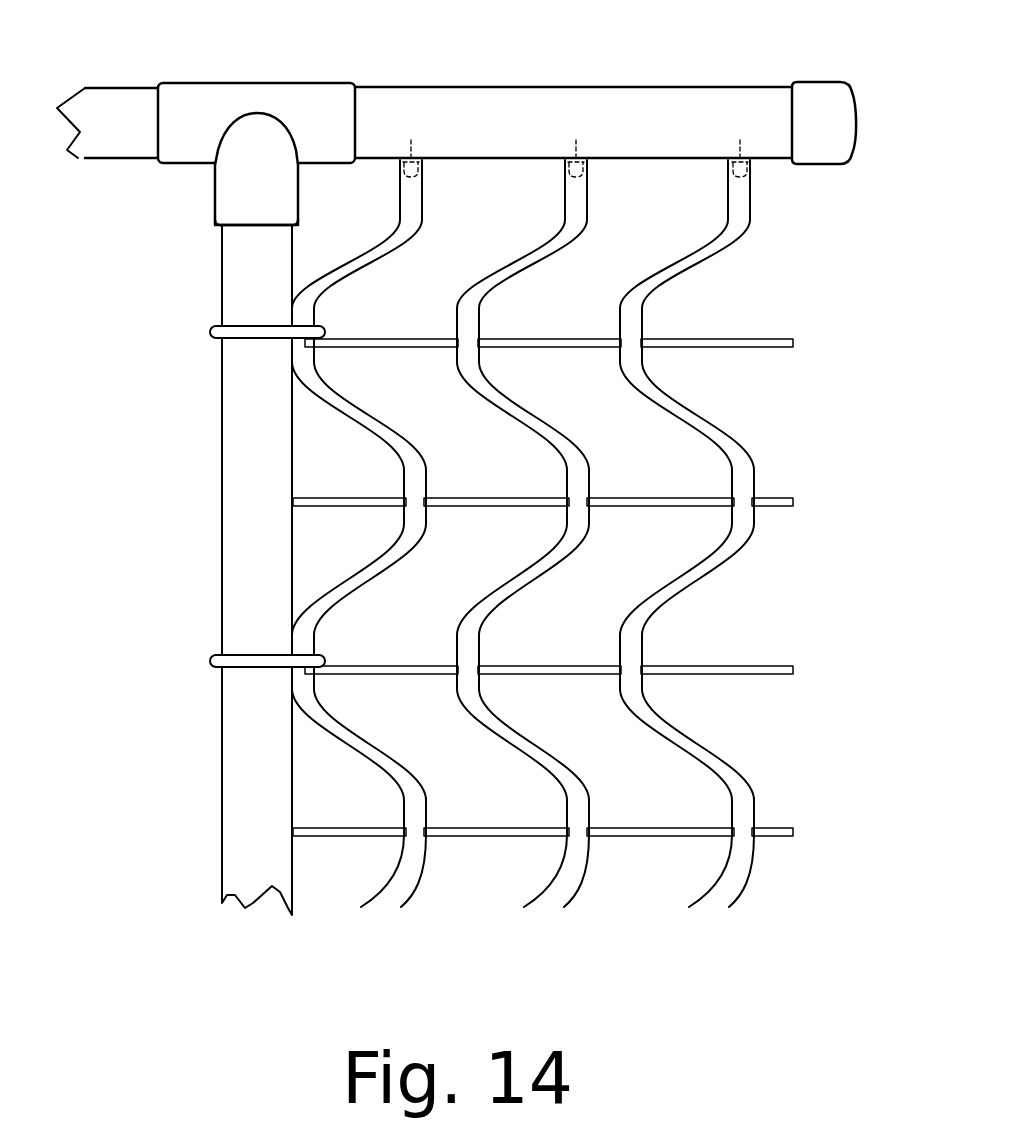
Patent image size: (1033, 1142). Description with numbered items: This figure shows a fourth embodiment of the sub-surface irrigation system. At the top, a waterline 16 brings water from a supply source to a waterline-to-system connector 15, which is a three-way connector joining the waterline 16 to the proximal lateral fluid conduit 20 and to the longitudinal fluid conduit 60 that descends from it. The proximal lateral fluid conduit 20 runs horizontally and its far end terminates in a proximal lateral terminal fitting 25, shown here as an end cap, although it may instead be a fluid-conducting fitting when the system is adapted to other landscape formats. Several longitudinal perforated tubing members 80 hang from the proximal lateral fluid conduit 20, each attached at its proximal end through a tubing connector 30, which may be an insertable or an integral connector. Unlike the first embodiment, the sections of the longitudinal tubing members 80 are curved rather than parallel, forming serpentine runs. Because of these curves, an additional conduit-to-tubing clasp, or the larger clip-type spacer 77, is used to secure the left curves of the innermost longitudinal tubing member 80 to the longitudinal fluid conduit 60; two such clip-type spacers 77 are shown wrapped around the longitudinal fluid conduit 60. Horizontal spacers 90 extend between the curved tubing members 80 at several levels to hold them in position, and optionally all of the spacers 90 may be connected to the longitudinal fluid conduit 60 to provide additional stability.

The waterline-to-system connector 15 is at (257, 157).
The waterline 16 is at (122, 122).
The proximal lateral fluid conduit 20 is at (697, 115).
The proximal lateral terminal fitting 25 is at (826, 149).
The tubing connector 30 is at (422, 161).
The longitudinal fluid conduit 60 is at (248, 432).
The clip-type spacer 77 is at (253, 326).
The longitudinal perforated tubing member 80 is at (407, 458).
The spacer 90 is at (380, 345).